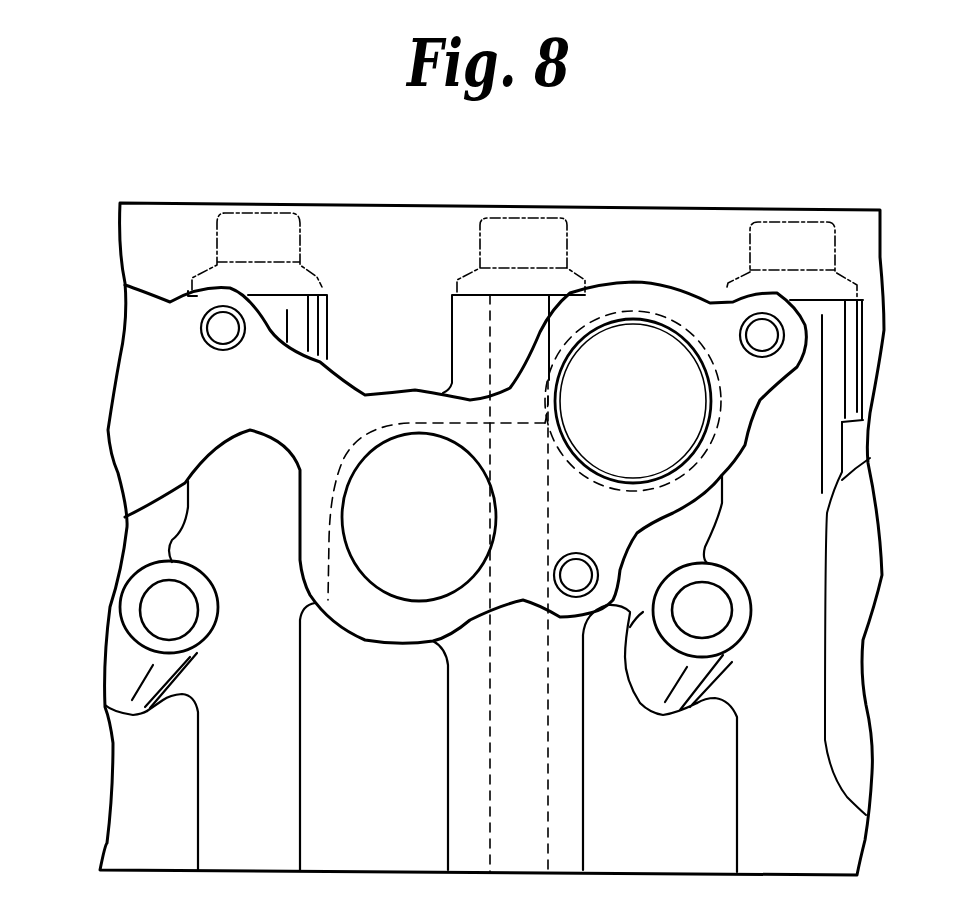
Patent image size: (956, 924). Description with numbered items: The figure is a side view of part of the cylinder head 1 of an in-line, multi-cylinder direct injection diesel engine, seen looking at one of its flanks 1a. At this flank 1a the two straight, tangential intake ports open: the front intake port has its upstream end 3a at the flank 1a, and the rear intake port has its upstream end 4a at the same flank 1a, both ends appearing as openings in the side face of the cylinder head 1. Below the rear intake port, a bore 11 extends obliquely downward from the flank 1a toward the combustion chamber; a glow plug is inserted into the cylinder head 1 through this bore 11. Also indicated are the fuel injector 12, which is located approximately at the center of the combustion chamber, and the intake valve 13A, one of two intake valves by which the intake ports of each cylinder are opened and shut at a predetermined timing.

The cylinder head 1 is at (122, 794).
The flank 1a is at (386, 762).
The upstream end 3a is at (402, 445).
The upstream end 4a is at (641, 335).
The bore 11 is at (147, 603).
The fuel injector 12 is at (257, 220).
The intake valve 13A is at (521, 222).